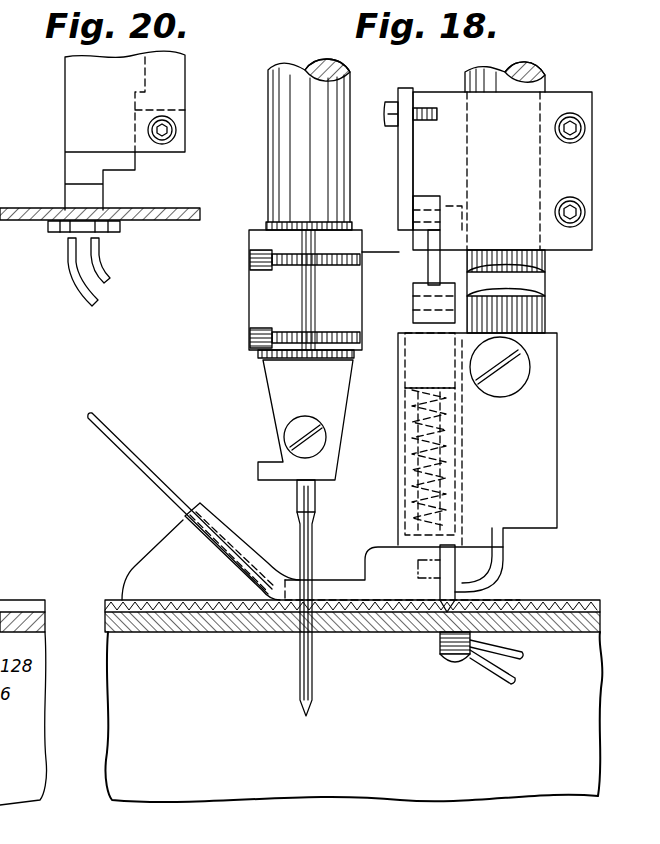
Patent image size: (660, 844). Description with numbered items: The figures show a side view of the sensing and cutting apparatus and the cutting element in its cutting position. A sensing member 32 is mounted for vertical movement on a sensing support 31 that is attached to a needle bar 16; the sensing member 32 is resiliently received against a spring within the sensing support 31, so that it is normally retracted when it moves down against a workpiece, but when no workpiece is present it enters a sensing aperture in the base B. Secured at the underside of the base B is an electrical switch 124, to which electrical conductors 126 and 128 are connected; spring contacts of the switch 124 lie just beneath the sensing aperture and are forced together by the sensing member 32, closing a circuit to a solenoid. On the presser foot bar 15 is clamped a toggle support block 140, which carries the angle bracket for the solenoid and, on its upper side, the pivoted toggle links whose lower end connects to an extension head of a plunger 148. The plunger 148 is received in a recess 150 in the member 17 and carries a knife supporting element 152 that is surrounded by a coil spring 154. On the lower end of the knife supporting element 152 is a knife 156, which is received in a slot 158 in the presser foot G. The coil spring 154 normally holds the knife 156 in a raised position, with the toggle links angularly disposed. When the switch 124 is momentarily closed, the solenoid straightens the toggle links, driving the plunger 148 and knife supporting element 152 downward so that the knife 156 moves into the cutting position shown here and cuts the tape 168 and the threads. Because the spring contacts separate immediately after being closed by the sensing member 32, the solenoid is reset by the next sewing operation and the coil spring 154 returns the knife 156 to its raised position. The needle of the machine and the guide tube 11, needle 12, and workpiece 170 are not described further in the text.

In FIG. 18, the guide tube 11 is at (237, 553).
In FIG. 18, the needle 12 is at (301, 677).
In FIG. 18, the presser foot bar 15 is at (542, 82).
In FIG. 18, the needle bar 16 is at (290, 143).
In FIG. 18, the member 17 is at (532, 439).
In FIG. 20, the sensing support 31 is at (16, 391).
In FIG. 18, the sensing support 31 is at (382, 252).
In FIG. 20, the sensing member 32 is at (95, 196).
In FIG. 20, the electrical switch 124 is at (92, 233).
In FIG. 18, the electrical switch 124 is at (440, 656).
In FIG. 20, the electrical conductor 126 is at (95, 303).
In FIG. 18, the electrical conductor 126 is at (497, 668).
In FIG. 20, the electrical conductor 128 is at (103, 276).
In FIG. 18, the electrical conductor 128 is at (520, 660).
In FIG. 18, the toggle support block 140 is at (570, 172).
In FIG. 18, the plunger 148 is at (413, 302).
In FIG. 18, the recess 150 is at (398, 362).
In FIG. 18, the knife supporting element 152 is at (400, 463).
In FIG. 18, the coil spring 154 is at (404, 496).
In FIG. 18, the knife 156 is at (496, 588).
In FIG. 18, the slot 158 is at (462, 583).
In FIG. 18, the tape 168 is at (146, 466).
In FIG. 18, the fabric 170 is at (576, 630).
In FIG. 20, the base B is at (170, 213).
In FIG. 18, the base B is at (214, 618).
In FIG. 18, the presser foot G is at (157, 566).